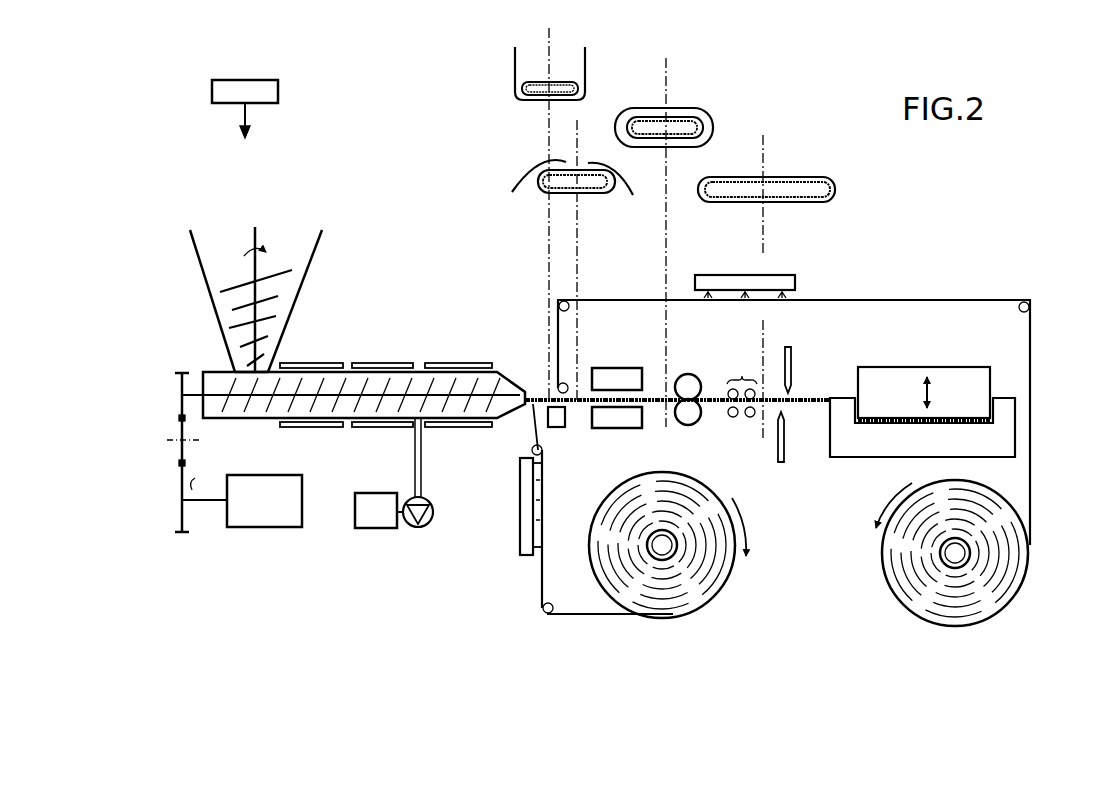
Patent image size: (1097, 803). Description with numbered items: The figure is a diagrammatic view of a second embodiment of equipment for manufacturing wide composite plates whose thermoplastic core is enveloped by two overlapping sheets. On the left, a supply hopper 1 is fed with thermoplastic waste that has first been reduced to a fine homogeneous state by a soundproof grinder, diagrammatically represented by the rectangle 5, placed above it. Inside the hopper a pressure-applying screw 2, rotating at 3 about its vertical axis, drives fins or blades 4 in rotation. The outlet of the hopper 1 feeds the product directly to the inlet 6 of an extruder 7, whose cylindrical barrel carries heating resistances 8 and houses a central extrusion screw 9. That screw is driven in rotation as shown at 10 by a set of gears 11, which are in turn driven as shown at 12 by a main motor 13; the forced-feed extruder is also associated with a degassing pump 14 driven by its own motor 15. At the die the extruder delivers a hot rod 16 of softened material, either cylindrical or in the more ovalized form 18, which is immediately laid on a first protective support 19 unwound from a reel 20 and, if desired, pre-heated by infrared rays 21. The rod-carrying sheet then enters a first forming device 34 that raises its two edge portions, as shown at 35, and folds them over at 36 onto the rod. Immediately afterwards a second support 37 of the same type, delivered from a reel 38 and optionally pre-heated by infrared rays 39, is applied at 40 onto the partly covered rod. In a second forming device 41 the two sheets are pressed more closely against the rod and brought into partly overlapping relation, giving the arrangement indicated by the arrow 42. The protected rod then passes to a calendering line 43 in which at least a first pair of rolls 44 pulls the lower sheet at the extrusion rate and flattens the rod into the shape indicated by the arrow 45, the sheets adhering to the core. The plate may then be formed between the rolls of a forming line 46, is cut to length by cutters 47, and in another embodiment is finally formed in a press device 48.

The supply hopper 1 is at (210, 302).
The pressure-applying screw 2 is at (276, 296).
The rotation of the pressure-applying screw 3 is at (248, 254).
The fins or blades 4 is at (290, 271).
The grinder 5 is at (250, 92).
The inlet 6 is at (243, 372).
The extruder 7 is at (267, 420).
The heating resistances 8 is at (378, 363).
The central extrusion screw 9 is at (383, 400).
The rotation of the extrusion screw 10 is at (194, 403).
The set of gears 11 is at (173, 446).
The rotation of the set of gears 12 is at (196, 507).
The main motor 13 is at (264, 501).
The degassing pump 14 is at (428, 524).
The motor 15 is at (379, 510).
The rod 16 is at (547, 390).
The ovalized rod 18 is at (567, 80).
The first protective support 19 is at (540, 480).
The reel 20 is at (720, 594).
The infrared rays 21 is at (522, 490).
The first forming device 34 is at (552, 430).
The raised edge portions 35 is at (515, 62).
The folded-over edge portions 36 is at (560, 186).
The second support 37 is at (1030, 437).
The reel 38 is at (879, 584).
The infrared rays 39 is at (778, 273).
The application point of the second support 40 is at (571, 165).
The second forming device 41 is at (611, 378).
The arrangement of overlapping sheets 42 is at (682, 100).
The calendering line 43 is at (693, 377).
The first pair of rolls 44 is at (685, 428).
The flattened plate 45 is at (893, 425).
The forming line 46 is at (745, 381).
The cutters 47 is at (792, 365).
The press device 48 is at (941, 364).